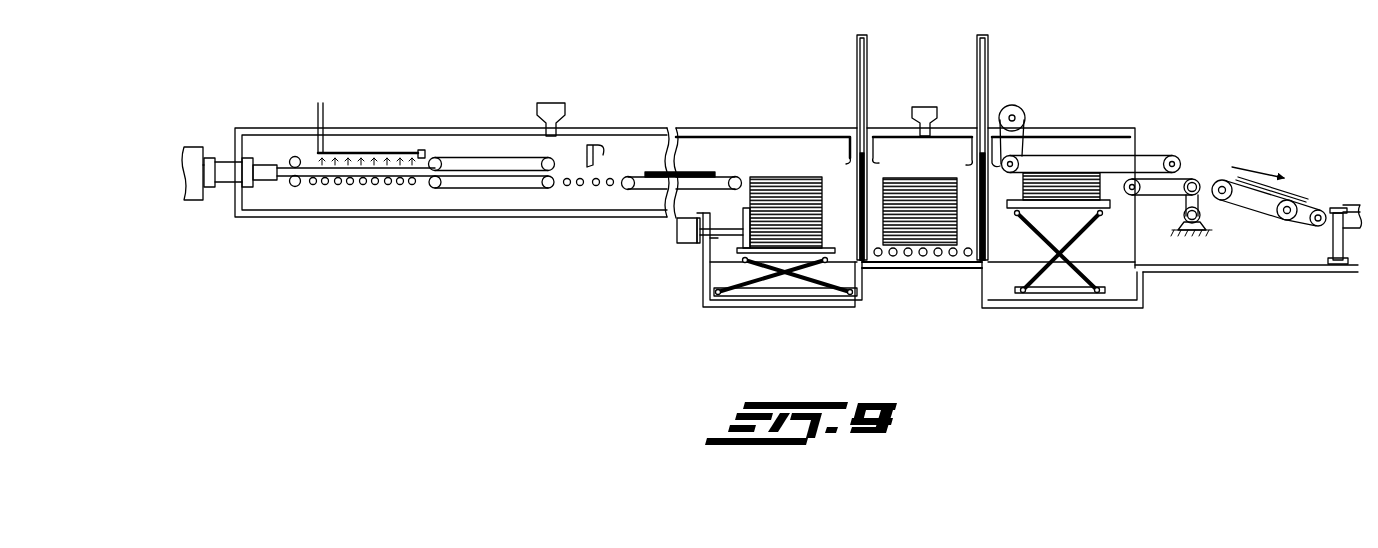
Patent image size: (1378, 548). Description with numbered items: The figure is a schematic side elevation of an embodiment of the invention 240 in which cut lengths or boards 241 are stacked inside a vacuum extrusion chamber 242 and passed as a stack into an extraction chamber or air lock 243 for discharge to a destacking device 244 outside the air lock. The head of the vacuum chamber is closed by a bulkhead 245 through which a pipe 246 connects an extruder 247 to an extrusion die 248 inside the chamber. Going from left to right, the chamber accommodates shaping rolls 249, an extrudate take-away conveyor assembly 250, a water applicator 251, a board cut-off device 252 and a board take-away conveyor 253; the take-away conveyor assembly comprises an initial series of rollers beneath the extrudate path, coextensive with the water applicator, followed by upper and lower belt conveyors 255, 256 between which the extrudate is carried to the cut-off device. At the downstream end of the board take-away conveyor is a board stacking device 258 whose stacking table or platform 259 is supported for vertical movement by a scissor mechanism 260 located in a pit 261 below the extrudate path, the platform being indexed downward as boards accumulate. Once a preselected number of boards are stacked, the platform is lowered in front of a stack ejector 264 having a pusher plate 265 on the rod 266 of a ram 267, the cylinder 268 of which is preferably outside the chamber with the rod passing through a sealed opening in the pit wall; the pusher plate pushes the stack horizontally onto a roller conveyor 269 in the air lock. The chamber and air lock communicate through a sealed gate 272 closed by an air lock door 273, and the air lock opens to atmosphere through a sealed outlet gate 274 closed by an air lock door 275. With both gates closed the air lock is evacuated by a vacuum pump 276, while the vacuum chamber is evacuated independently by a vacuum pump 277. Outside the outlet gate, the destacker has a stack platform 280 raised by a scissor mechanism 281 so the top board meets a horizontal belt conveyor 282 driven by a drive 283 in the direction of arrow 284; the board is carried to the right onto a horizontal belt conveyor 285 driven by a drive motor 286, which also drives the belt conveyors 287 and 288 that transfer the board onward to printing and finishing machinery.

The embodiment of the invention 240 is at (504, 96).
The boards 241 is at (697, 172).
The vacuum extrusion chamber 242 is at (429, 221).
The extraction chamber or air lock 243 is at (887, 126).
The destacking device 244 is at (1238, 98).
The bulkhead 245 is at (236, 212).
The pipe 246 is at (221, 161).
The extruder 247 is at (195, 201).
The extrusion die 248 is at (270, 181).
The shaping rolls 249 is at (295, 156).
The extrudate take-away conveyor assembly 250 is at (374, 186).
The water applicator 251 is at (380, 152).
The board cut-off device 252 is at (600, 143).
The board take-away conveyor 253 is at (632, 189).
The upper belt conveyor 255 is at (478, 157).
The lower belt conveyor 256 is at (478, 189).
The board stacking device 258 is at (788, 172).
The stacking table or platform 259 is at (728, 264).
The scissor mechanism 260 is at (798, 282).
The pit 261 is at (843, 309).
The stack ejector 264 is at (680, 247).
The pusher plate 265 is at (742, 212).
The rod 266 is at (716, 240).
The ram 267 is at (676, 240).
The cylinder 268 is at (676, 226).
The roller conveyor 269 is at (921, 258).
The sealed gate 272 is at (848, 160).
The air lock door 273 is at (864, 184).
The sealed outlet gate 274 is at (966, 163).
The air lock door 275 is at (989, 212).
The vacuum pump 276 is at (922, 106).
The vacuum pump 277 is at (560, 103).
The stack platform 280 is at (1110, 207).
The scissor mechanism 281 is at (1075, 282).
The horizontal belt conveyor 282 is at (1073, 155).
The drive 283 is at (1004, 106).
The arrow 284 is at (1176, 148).
The horizontal belt conveyor 285 is at (1164, 193).
The drive motor 286 is at (1202, 214).
The belt conveyor 287 is at (1265, 214).
The belt conveyor 288 is at (1334, 207).